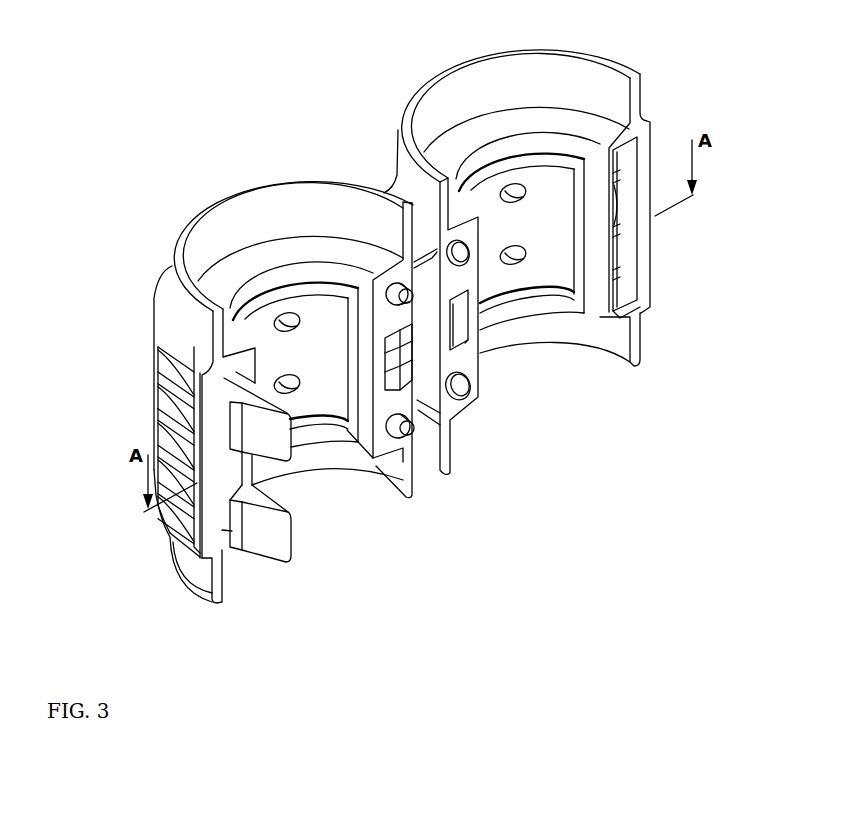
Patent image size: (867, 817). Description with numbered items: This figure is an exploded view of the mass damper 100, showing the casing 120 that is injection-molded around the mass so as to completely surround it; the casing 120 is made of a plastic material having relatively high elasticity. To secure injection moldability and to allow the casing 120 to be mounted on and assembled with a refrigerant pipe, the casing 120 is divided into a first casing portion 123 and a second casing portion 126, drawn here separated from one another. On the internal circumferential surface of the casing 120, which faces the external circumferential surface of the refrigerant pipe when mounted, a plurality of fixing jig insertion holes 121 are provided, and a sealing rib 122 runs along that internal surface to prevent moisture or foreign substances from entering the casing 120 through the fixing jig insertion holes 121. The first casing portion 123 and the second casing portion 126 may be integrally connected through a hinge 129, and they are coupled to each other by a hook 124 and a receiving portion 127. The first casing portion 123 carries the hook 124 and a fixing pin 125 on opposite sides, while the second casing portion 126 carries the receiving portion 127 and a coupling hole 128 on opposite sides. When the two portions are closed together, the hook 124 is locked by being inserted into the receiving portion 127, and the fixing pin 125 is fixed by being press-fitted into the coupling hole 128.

The mass damper 100 is at (164, 218).
The casing 120 is at (338, 12).
The fixing jig insertion holes 121 is at (294, 388).
The sealing rib 122 is at (350, 430).
The first casing portion 123 is at (280, 182).
The hook 124 is at (263, 546).
The fixing pin 125 is at (410, 433).
The second casing portion 126 is at (418, 82).
The receiving portion 127 is at (617, 258).
The coupling hole 128 is at (462, 391).
The hinge 129 is at (418, 398).